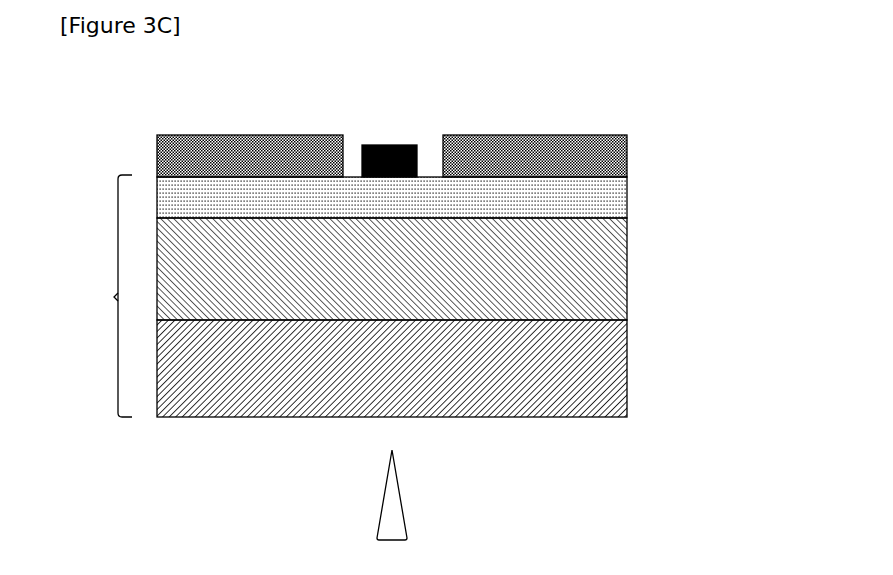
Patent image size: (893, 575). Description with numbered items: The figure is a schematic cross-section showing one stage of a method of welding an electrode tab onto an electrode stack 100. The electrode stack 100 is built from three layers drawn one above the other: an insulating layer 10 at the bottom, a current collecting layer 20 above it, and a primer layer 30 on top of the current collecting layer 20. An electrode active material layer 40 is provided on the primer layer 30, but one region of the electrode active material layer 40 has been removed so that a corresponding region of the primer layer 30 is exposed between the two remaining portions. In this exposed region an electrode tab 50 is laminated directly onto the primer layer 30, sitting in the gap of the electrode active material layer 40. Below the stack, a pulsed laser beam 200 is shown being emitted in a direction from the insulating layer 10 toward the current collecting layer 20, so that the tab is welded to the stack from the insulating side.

The insulating layer 10 is at (628, 365).
The current collecting layer 20 is at (628, 270).
The primer layer 30 is at (628, 194).
The electrode active material layer 40 is at (628, 140).
The electrode tab 50 is at (382, 144).
The electrode stack 100 is at (115, 297).
The pulsed laser beam 200 is at (407, 487).